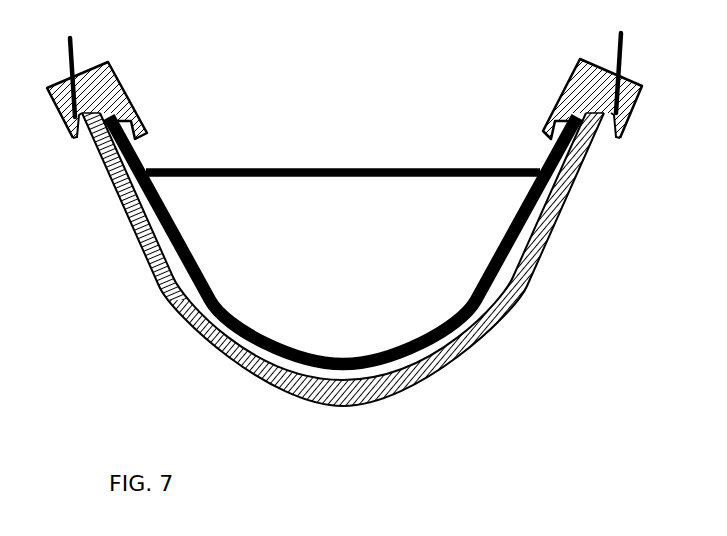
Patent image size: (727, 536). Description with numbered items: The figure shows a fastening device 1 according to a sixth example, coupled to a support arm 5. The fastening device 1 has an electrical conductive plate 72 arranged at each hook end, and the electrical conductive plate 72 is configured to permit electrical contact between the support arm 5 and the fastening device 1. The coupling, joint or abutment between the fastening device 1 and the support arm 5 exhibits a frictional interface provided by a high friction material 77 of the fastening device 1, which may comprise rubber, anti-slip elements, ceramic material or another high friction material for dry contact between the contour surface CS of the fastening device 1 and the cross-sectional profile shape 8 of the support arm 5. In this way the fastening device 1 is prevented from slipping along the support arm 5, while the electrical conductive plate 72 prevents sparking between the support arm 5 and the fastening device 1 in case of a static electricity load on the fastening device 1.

The fastening device 1 is at (342, 244).
The support arm 5 is at (359, 117).
The cross-sectional profile shape 8 is at (503, 292).
The electrical conductive plate 72 is at (118, 178).
The friction material 77 is at (512, 263).
The contour surface CS is at (470, 306).